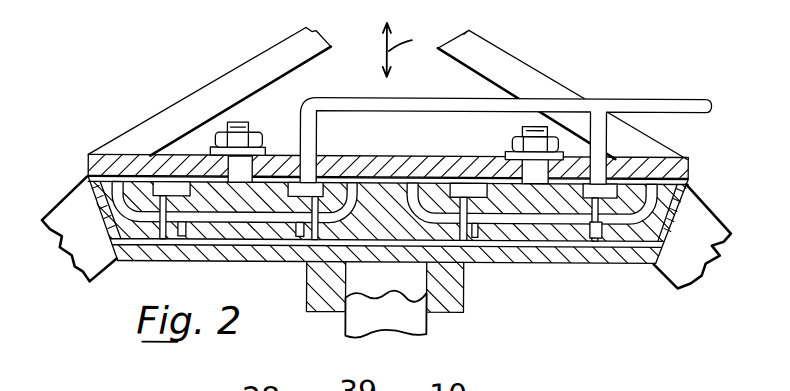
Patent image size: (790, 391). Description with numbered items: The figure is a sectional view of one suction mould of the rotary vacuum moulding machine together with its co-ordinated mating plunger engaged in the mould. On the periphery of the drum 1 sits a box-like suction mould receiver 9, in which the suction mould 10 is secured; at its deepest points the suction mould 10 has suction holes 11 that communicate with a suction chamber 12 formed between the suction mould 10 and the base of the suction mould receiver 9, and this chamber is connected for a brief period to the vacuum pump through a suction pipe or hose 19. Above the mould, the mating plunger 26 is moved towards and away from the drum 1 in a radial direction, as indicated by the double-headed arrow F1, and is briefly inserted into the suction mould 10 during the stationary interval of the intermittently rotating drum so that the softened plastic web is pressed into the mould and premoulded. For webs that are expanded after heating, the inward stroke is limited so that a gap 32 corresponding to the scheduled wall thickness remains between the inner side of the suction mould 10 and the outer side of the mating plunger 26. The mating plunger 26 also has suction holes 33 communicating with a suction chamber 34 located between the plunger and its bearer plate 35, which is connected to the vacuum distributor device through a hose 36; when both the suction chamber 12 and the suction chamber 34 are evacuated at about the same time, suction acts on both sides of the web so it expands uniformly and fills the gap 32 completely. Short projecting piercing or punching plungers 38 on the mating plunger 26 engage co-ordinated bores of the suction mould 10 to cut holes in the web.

The drum 1 is at (77, 281).
The suction mould receiver 9 is at (505, 257).
The suction mould 10 is at (565, 235).
The suction holes 11 is at (277, 220).
The suction chamber 12 is at (523, 262).
The suction pipe or hose 19 is at (416, 323).
The mating plunger 26 is at (634, 207).
The gap 32 is at (207, 220).
The suction holes 33 is at (336, 193).
The suction chamber 34 is at (207, 180).
The bearer plate 35 is at (276, 160).
The hose 36 is at (598, 103).
The piercing or punching plunger 38 is at (599, 233).
The double-headed arrow F1 is at (411, 44).